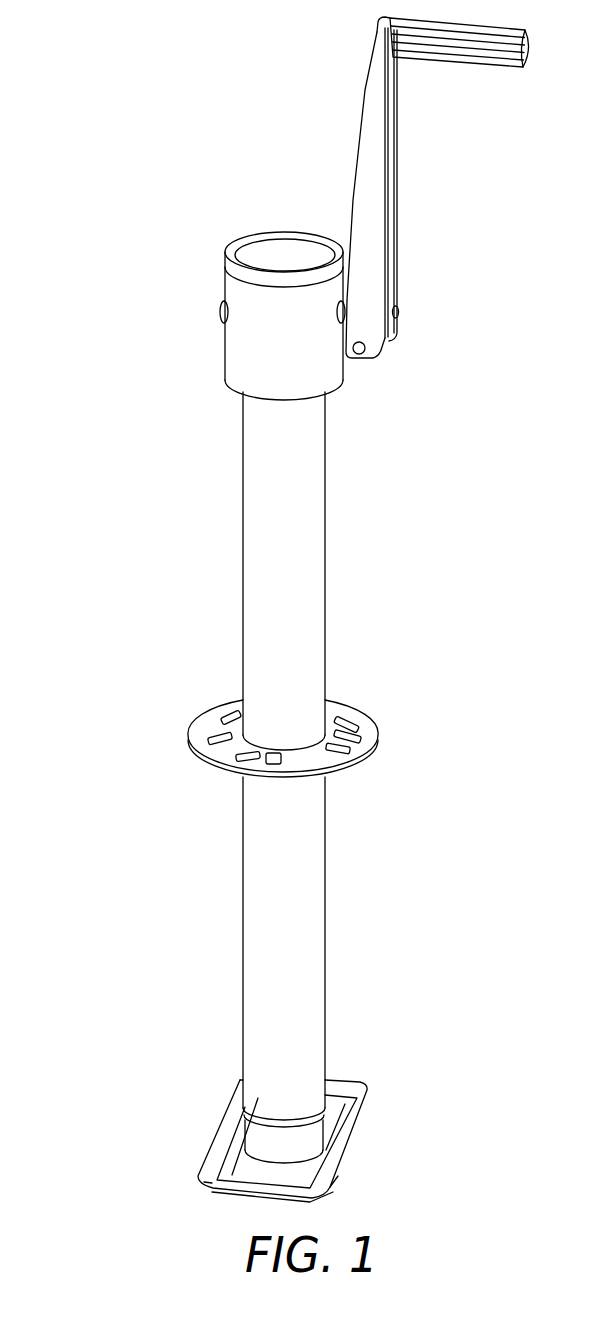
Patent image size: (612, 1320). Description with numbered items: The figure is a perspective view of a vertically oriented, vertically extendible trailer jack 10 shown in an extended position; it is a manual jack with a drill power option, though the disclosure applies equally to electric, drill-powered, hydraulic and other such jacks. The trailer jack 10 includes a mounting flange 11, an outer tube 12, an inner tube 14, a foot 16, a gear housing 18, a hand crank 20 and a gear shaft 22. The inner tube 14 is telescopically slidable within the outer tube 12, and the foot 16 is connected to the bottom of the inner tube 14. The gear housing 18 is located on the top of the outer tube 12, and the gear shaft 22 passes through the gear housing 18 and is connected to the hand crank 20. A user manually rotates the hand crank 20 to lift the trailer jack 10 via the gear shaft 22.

The trailer jack 10 is at (97, 478).
The mounting flange 11 is at (212, 732).
The outer tube 12 is at (313, 590).
The inner tube 14 is at (300, 1122).
The foot 16 is at (230, 1162).
The gear housing 18 is at (237, 291).
The hand crank 20 is at (377, 140).
The gear shaft 22 is at (222, 308).